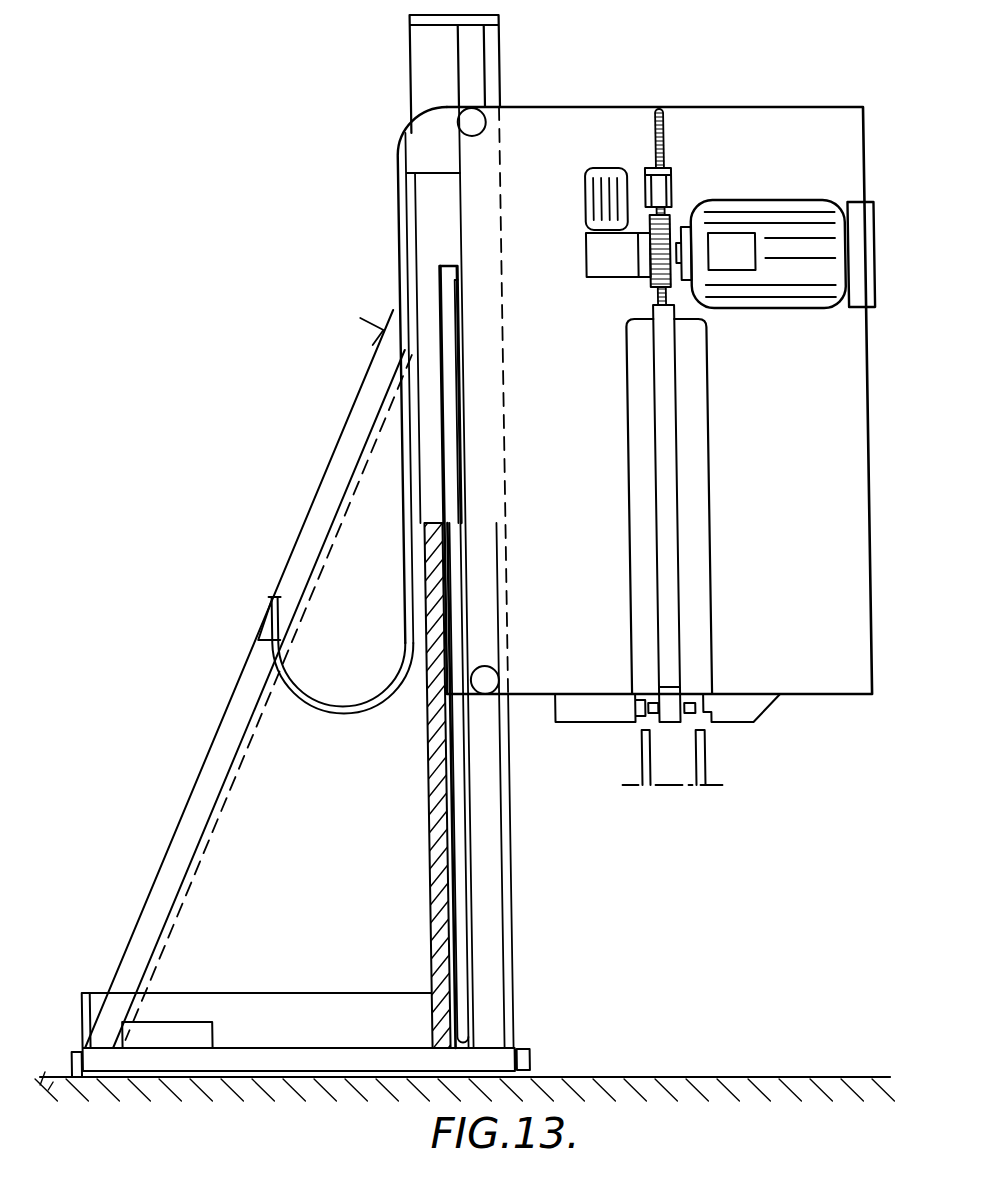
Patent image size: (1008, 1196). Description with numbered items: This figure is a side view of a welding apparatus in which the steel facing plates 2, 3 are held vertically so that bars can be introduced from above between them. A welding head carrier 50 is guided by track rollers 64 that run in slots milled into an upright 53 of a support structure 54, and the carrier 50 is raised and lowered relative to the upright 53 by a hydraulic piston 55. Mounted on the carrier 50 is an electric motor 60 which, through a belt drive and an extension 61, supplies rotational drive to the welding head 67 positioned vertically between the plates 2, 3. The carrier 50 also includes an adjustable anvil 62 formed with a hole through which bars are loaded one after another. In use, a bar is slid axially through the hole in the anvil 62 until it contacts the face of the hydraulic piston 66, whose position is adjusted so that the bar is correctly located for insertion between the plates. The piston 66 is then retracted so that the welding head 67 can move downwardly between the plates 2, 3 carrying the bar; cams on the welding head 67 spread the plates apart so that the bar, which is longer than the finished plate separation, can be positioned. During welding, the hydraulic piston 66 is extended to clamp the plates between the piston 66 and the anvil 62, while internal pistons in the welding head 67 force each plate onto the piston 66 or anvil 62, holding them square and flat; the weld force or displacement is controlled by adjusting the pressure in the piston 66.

The steel facing plate 2 is at (697, 763).
The steel facing plate 3 is at (631, 768).
The welding head carrier 50 is at (802, 120).
The upright 53 is at (416, 852).
The support structure 54 is at (302, 1002).
The hydraulic piston 55 is at (446, 493).
The electric motor 60 is at (865, 282).
The extension 61 is at (674, 362).
The adjustable anvil 62 is at (736, 705).
The track roller 64 is at (498, 675).
The hydraulic piston 66 is at (596, 710).
The welding head 67 is at (663, 712).